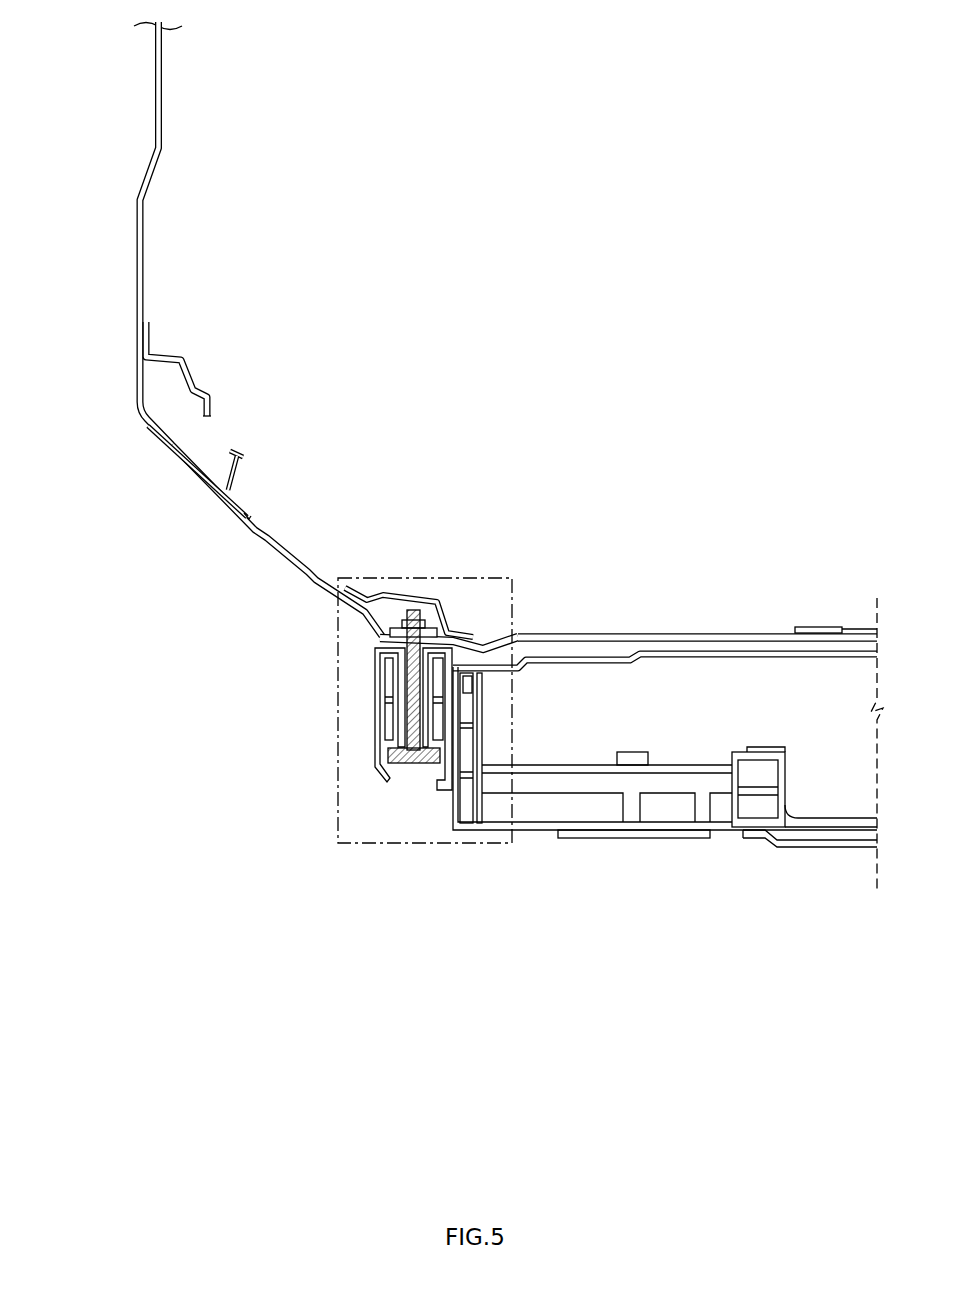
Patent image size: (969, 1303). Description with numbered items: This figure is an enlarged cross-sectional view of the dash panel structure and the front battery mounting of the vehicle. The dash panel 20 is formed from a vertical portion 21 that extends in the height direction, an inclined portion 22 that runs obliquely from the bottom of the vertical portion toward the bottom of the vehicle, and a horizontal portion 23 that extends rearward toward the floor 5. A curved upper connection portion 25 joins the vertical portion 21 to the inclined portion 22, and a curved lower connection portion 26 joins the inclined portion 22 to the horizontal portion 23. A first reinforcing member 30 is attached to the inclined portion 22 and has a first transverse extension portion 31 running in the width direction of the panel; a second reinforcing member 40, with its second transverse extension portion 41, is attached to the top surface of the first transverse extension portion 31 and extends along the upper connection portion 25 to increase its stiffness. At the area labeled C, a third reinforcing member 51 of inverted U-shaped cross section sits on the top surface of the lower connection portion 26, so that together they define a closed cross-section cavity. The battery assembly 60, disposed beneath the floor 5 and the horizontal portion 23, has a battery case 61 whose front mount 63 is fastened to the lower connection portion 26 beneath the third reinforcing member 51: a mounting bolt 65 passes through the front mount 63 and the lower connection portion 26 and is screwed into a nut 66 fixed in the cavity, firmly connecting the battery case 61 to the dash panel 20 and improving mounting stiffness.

The dash panel 20 is at (467, 367).
The vertical portion 21 is at (138, 263).
The inclined portion 22 is at (290, 577).
The horizontal portion 23 is at (661, 632).
The upper connection portion 25 is at (126, 434).
The lower connection portion 26 is at (365, 646).
The first reinforcing member 30 is at (228, 463).
The first transverse extension portion 31 is at (214, 475).
The second reinforcing member 40 is at (199, 356).
The second transverse extension portion 41 is at (209, 393).
The floor 5 is at (826, 627).
The third reinforcing member 51 is at (434, 598).
The battery assembly 60 is at (665, 816).
The battery case 61 is at (540, 812).
The front mount 63 is at (375, 725).
The mounting bolt 65 is at (415, 764).
The nut 66 is at (401, 618).
The connection region C is at (331, 837).